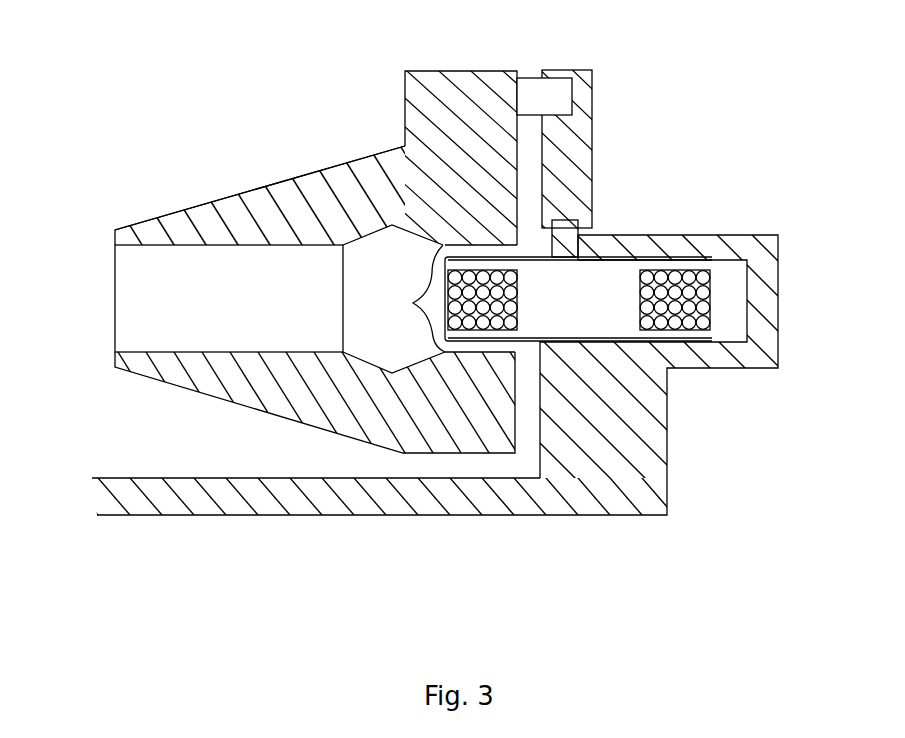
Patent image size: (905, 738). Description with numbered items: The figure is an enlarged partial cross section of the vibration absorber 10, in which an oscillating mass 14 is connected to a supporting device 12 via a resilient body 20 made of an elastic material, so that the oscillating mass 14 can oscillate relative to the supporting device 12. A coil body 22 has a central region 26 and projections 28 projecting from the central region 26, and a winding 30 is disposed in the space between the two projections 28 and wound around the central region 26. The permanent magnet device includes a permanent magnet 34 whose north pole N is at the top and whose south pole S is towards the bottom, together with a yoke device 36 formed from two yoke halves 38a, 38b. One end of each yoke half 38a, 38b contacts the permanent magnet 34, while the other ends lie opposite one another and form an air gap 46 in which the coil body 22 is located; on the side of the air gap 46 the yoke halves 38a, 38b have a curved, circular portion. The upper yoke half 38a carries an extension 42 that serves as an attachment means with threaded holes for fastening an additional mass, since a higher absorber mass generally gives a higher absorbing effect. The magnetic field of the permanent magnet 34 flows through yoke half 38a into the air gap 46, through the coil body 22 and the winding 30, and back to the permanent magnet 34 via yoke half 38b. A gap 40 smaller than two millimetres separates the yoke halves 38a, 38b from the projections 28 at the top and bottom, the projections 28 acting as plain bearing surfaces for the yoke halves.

The vibration absorber 10 is at (127, 97).
The supporting device 12 is at (382, 517).
The oscillating mass 14 is at (316, 160).
The resilient body 20 is at (592, 148).
The coil body 22 is at (600, 293).
The central region 26 is at (583, 365).
The projections 28 is at (677, 235).
The winding 30 is at (710, 297).
The permanent magnet 34 is at (113, 295).
The yoke device 36 is at (222, 199).
The yoke half 38a is at (348, 180).
The yoke half 38b is at (300, 409).
The gap 40 is at (523, 347).
The extension 42 is at (458, 71).
The air gap 46 is at (395, 290).